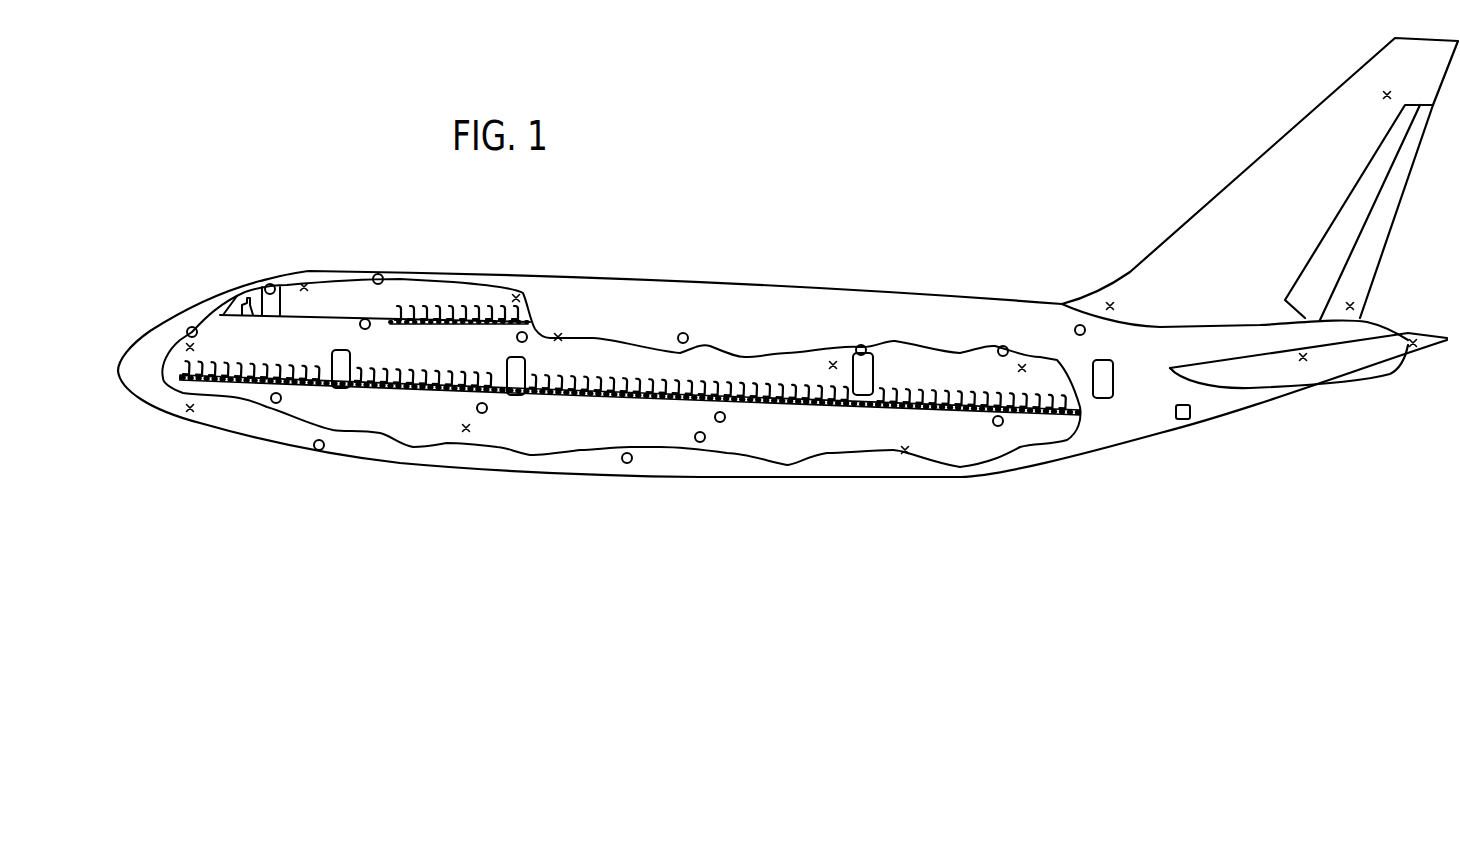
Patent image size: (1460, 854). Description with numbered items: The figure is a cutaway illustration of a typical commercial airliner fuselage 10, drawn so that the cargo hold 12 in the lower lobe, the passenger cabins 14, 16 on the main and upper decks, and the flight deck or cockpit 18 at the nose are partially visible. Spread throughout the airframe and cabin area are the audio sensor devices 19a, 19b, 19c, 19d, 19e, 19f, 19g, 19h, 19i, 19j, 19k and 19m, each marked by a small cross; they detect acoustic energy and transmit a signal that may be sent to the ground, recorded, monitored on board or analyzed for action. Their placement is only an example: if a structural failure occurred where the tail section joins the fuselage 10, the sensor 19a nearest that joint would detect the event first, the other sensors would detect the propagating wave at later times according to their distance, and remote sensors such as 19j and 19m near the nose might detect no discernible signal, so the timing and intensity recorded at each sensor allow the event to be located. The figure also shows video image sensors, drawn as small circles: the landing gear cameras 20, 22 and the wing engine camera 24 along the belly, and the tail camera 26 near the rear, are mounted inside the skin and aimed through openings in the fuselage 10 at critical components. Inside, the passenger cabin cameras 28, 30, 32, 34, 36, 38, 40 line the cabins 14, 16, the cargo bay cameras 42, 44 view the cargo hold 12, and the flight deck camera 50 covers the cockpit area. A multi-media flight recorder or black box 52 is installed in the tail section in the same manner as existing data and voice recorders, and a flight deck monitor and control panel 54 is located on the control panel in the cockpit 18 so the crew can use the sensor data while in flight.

The fuselage 10 is at (735, 251).
The cargo hold 12 is at (528, 436).
The passenger cabin 14 is at (734, 366).
The passenger cabin 16 is at (458, 296).
The flight deck or cockpit 18 is at (251, 278).
The audio sensor device 19a is at (1114, 306).
The audio sensor device 19b is at (1384, 93).
The audio sensor device 19c is at (1354, 306).
The audio sensor device 19d is at (1303, 360).
The audio sensor device 19e is at (1415, 346).
The audio sensor device 19f is at (1023, 365).
The audio sensor device 19g is at (559, 334).
The audio sensor device 19h is at (517, 296).
The audio sensor device 19i is at (305, 286).
The audio sensor device 19j is at (190, 349).
The audio sensor device 19k is at (906, 453).
The audio sensor device 19m is at (191, 412).
The landing gear camera 20 is at (317, 450).
The landing gear camera 22 is at (626, 463).
The wing engine camera 24 is at (700, 442).
The tail camera 26 is at (1081, 325).
The passenger cabin camera 28 is at (382, 275).
The passenger cabin camera 30 is at (197, 333).
The passenger cabin camera 32 is at (369, 327).
The passenger cabin camera 34 is at (517, 337).
The passenger cabin camera 36 is at (685, 333).
The passenger cabin camera 38 is at (865, 347).
The passenger cabin camera 40 is at (998, 352).
The cargo bay camera 42 is at (281, 398).
The cargo bay camera 44 is at (477, 408).
The flight deck camera 50 is at (715, 417).
The multi-media flight recorder 52 is at (993, 421).
The flight deck monitor and control panel 54 is at (237, 314).